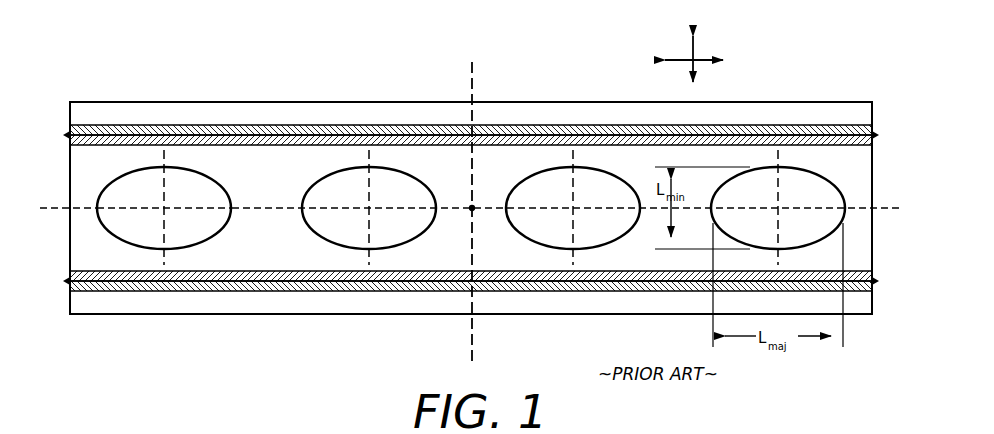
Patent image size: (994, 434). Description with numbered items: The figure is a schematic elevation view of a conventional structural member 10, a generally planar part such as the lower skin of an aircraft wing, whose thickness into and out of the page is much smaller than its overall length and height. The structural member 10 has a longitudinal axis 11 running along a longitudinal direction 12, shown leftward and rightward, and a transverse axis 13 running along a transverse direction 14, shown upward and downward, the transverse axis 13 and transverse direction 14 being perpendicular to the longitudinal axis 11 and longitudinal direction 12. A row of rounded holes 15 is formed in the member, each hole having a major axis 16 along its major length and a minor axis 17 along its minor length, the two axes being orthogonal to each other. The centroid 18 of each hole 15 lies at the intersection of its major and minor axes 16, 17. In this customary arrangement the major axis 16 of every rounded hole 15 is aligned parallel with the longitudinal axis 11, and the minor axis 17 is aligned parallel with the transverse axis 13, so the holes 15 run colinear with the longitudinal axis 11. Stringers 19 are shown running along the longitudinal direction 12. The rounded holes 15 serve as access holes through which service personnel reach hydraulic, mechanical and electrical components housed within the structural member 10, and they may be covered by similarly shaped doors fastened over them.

The structural member 10 is at (173, 112).
The longitudinal axis 11 is at (62, 206).
The longitudinal direction 12 is at (717, 55).
The transverse axis 13 is at (468, 80).
The transverse direction 14 is at (690, 44).
The rounded holes 15 is at (200, 183).
The major axis 16 is at (143, 207).
The minor axis 17 is at (163, 227).
The centroid 18 is at (473, 206).
The stringers 19 is at (787, 130).